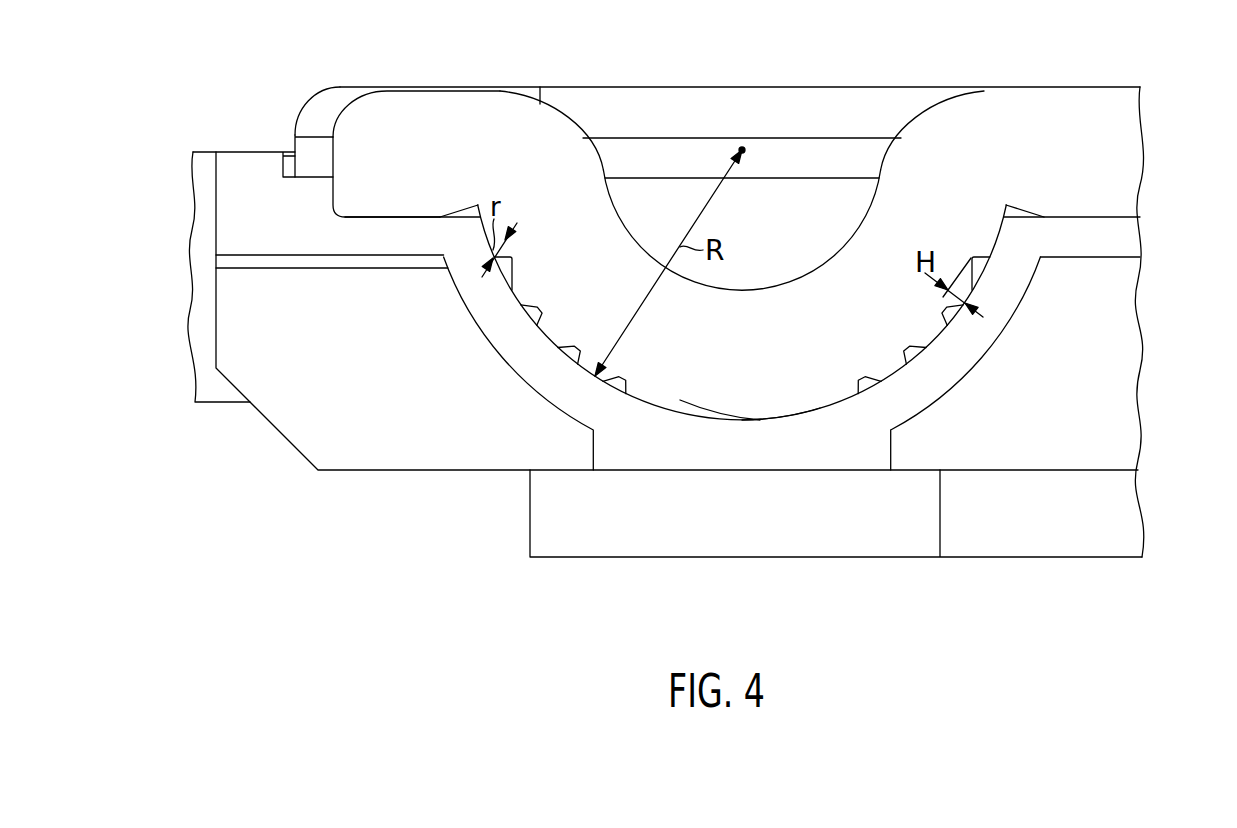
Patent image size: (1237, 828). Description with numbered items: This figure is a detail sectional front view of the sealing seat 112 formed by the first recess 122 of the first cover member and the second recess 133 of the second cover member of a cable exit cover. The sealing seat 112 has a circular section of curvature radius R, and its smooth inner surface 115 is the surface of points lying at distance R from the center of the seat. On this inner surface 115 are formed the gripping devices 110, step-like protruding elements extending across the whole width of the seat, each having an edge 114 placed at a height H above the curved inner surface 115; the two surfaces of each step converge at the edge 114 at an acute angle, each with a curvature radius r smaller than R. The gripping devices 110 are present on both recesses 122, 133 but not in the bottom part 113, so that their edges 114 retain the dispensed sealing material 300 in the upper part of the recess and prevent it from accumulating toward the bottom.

The gripping devices 110 is at (510, 257).
The sealing seat 112 is at (728, 430).
The bottom part 113 is at (788, 430).
The edge 114 is at (1003, 205).
The inner surface 115 is at (962, 305).
The first recess 122 is at (692, 375).
The second recess 133 is at (530, 385).
The sealing material 300 is at (1082, 122).